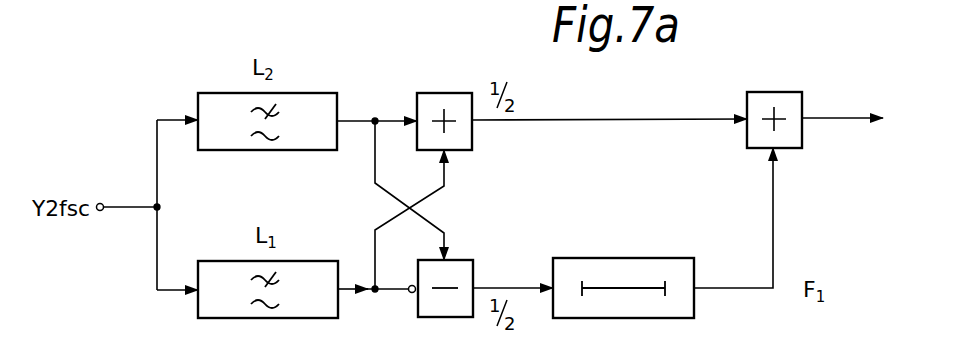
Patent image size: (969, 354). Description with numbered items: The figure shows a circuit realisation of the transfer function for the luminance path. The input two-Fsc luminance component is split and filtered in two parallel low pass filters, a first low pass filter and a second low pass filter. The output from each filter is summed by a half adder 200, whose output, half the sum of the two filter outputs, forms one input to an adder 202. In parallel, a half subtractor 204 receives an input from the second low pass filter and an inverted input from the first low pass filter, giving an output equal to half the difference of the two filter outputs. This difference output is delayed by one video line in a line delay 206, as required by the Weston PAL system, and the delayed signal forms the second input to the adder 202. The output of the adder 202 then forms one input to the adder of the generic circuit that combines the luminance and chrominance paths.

The half adder 200 is at (428, 100).
The adder 202 is at (788, 102).
The half subtractor 204 is at (460, 272).
The line delay 206 is at (678, 270).